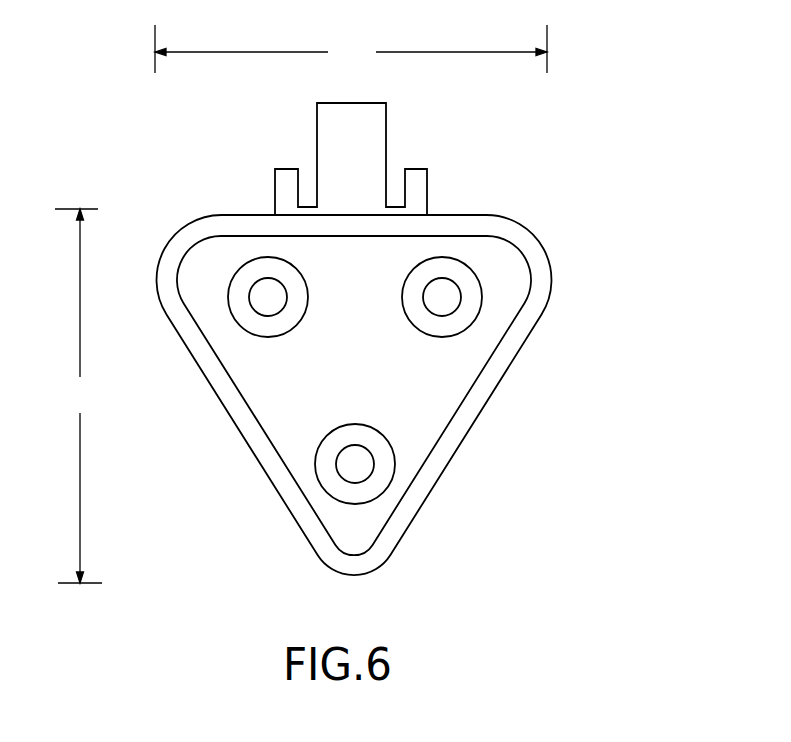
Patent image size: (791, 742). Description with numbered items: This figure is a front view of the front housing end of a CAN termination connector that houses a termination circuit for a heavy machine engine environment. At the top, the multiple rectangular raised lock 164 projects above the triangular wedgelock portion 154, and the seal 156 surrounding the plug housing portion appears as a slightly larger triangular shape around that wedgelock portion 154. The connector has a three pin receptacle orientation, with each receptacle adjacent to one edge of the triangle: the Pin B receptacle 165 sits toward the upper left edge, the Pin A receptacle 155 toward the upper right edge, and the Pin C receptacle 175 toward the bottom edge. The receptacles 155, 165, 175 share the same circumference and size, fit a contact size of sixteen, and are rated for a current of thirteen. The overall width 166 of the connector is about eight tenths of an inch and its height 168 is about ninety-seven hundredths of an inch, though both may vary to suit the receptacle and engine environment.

The wedgelock portion 154 is at (273, 383).
The Pin A receptacle 155 is at (494, 300).
The seal 156 is at (488, 415).
The raised lock 164 is at (394, 128).
The Pin B receptacle 165 is at (218, 321).
The width 166 is at (351, 49).
The height 168 is at (79, 396).
The Pin C receptacle 175 is at (312, 494).